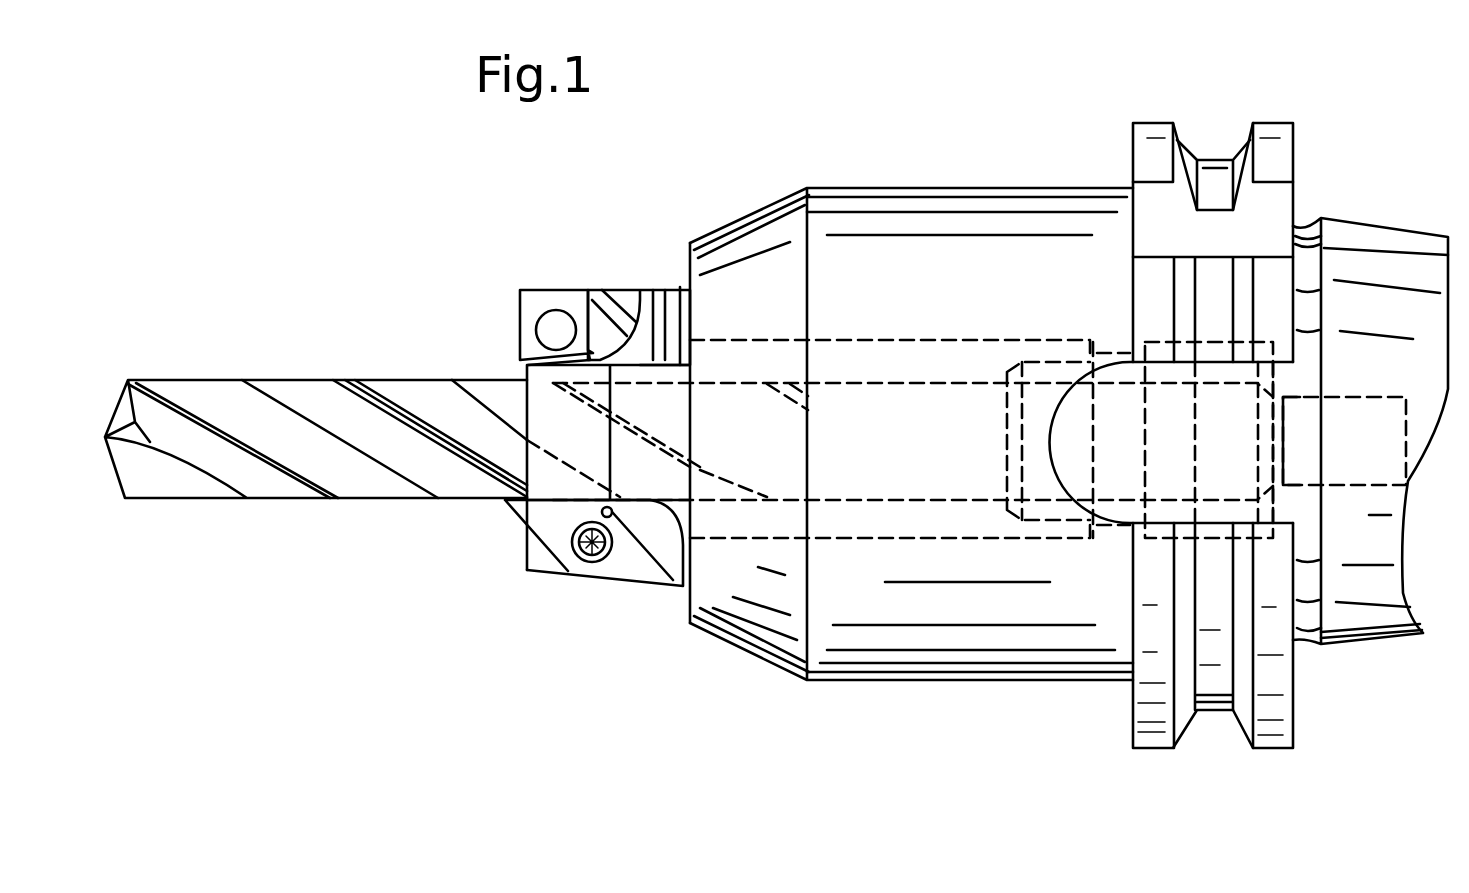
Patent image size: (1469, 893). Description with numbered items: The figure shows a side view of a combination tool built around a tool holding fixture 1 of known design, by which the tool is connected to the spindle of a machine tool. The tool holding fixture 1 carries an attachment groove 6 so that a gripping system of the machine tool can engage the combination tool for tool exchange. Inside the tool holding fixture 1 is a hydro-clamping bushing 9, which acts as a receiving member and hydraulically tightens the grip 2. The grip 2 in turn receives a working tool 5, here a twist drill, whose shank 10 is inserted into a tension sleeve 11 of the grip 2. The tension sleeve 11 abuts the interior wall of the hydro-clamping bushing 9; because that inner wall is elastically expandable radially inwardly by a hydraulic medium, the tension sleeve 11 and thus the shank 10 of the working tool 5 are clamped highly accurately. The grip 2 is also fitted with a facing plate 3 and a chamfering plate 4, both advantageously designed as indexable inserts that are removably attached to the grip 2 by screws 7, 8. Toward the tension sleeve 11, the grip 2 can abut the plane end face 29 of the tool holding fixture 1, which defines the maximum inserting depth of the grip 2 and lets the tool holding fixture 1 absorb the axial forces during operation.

The tool holding fixture 1 is at (972, 215).
The grip 2 is at (638, 360).
The facing plate 3 is at (530, 312).
The chamfering plate 4 is at (612, 565).
The working tool 5 is at (272, 478).
The attachment groove 6 is at (1217, 718).
The screw 7 is at (554, 322).
The screw 8 is at (567, 555).
The hydro-clamping bushing 9 is at (870, 540).
The shank 10 is at (893, 395).
The tension sleeve 11 is at (974, 515).
The plane end face 29 is at (693, 248).